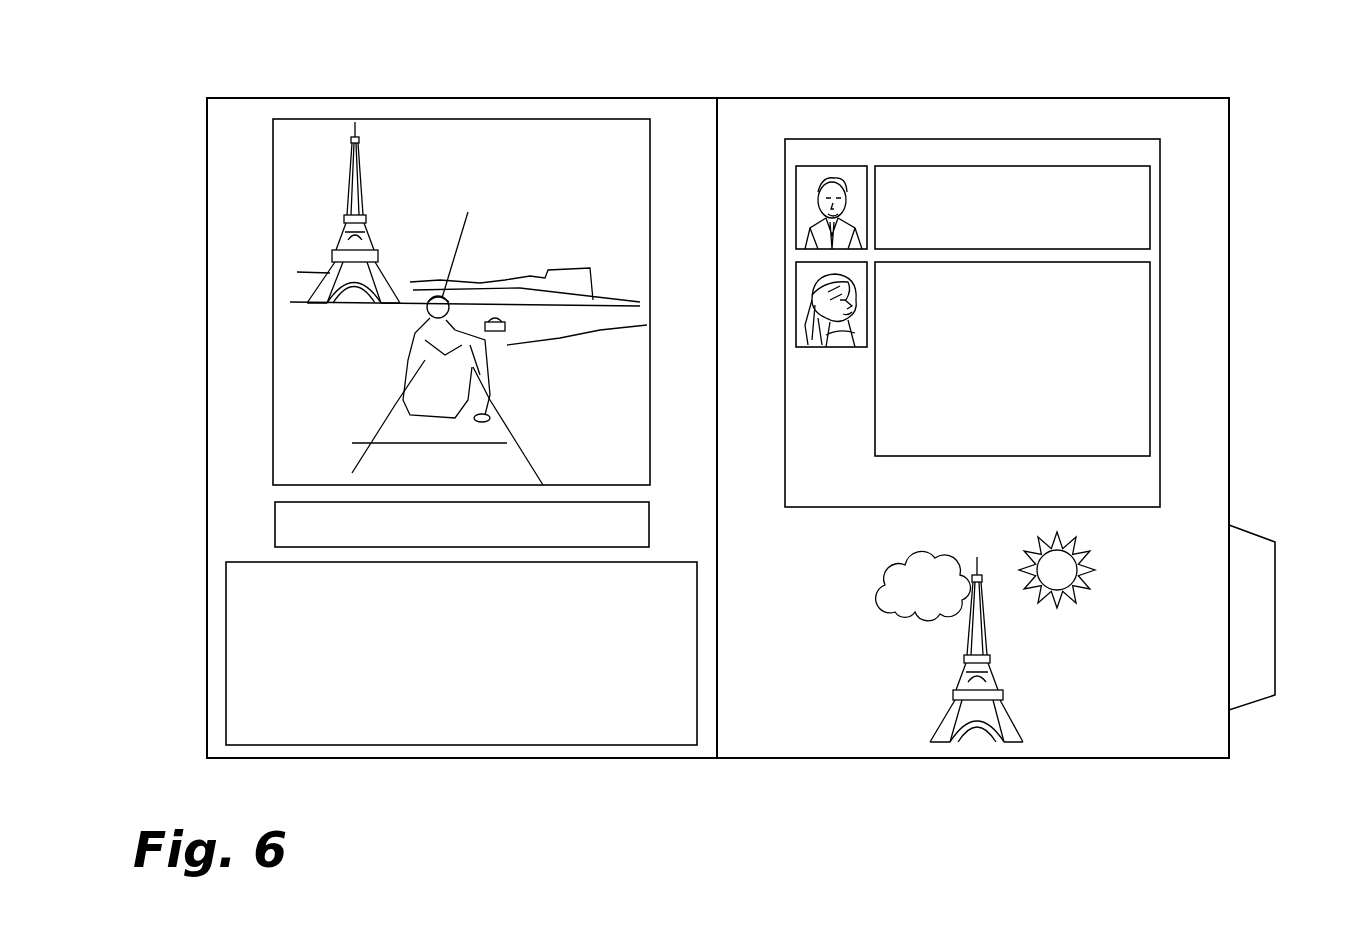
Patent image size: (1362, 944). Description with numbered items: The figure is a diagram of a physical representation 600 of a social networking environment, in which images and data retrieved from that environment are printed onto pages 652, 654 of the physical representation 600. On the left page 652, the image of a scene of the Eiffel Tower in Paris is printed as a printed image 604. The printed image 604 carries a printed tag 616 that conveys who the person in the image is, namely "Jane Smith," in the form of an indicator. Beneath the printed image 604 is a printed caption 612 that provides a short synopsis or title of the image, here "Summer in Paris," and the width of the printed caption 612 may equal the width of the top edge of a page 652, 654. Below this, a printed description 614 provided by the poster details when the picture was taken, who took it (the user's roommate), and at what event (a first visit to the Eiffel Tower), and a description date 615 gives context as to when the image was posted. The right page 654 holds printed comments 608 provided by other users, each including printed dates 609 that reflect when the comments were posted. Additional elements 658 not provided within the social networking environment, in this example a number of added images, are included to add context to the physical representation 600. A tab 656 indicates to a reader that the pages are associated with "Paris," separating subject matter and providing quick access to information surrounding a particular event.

The physical representation 600 is at (1250, 122).
The printed image 604 is at (359, 302).
The page 652 is at (238, 330).
The printed tag 616 is at (472, 205).
The printed caption 612 is at (290, 530).
The printed description 614 is at (393, 653).
The description date 615 is at (235, 600).
The page 654 is at (1068, 281).
The printed comments 608 is at (973, 152).
The printed dates 609 is at (962, 228).
The elements 658 is at (900, 676).
The tab 656 is at (1248, 682).